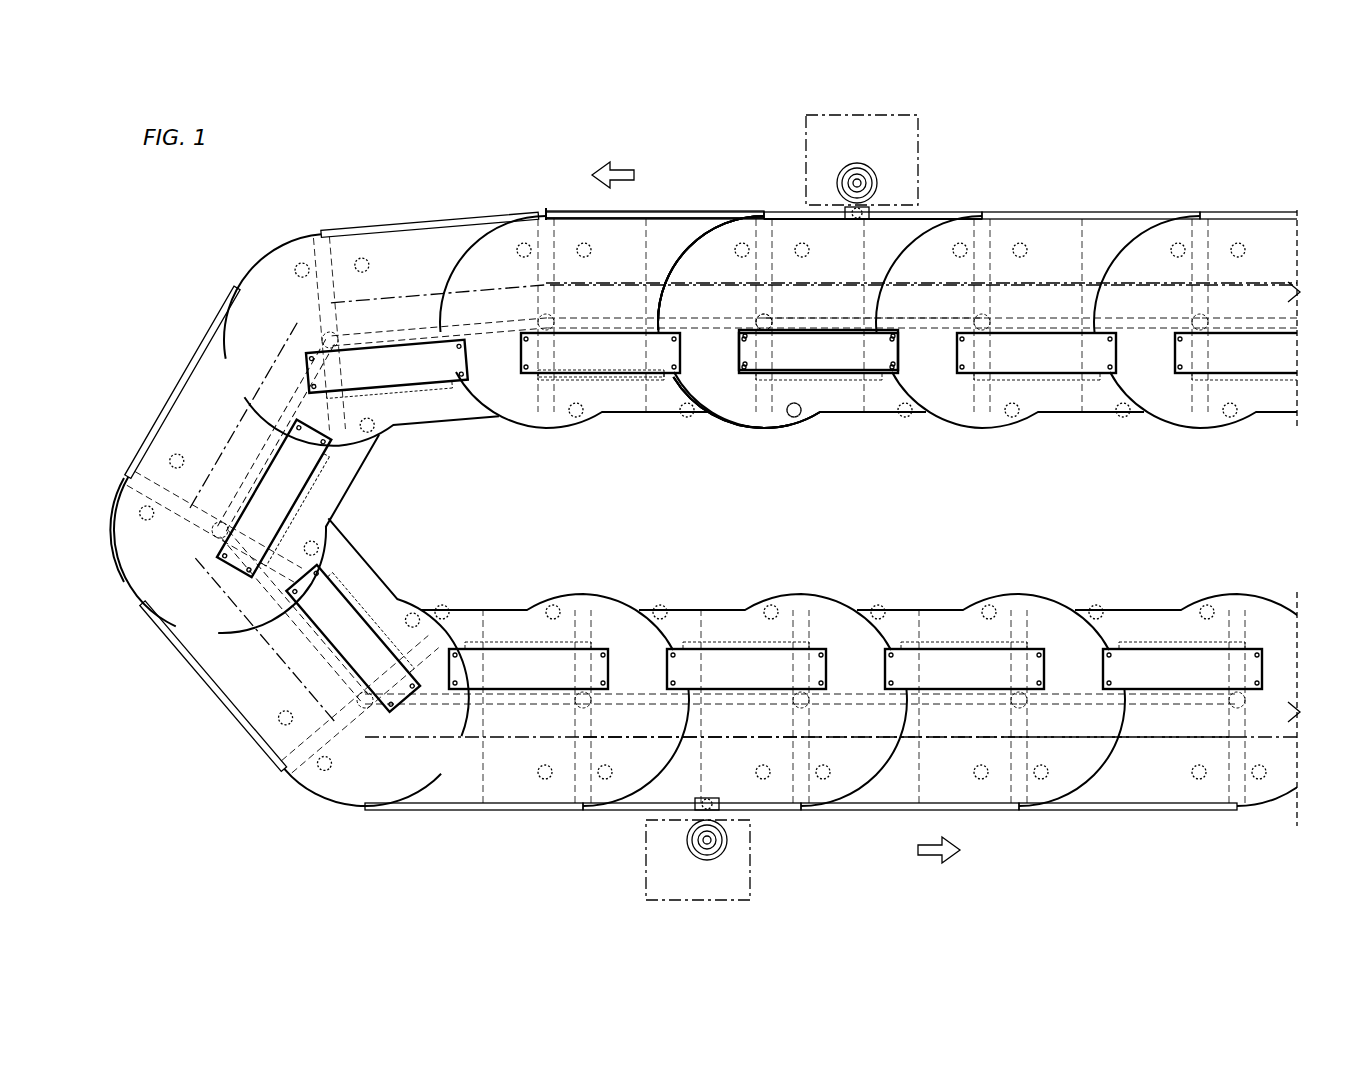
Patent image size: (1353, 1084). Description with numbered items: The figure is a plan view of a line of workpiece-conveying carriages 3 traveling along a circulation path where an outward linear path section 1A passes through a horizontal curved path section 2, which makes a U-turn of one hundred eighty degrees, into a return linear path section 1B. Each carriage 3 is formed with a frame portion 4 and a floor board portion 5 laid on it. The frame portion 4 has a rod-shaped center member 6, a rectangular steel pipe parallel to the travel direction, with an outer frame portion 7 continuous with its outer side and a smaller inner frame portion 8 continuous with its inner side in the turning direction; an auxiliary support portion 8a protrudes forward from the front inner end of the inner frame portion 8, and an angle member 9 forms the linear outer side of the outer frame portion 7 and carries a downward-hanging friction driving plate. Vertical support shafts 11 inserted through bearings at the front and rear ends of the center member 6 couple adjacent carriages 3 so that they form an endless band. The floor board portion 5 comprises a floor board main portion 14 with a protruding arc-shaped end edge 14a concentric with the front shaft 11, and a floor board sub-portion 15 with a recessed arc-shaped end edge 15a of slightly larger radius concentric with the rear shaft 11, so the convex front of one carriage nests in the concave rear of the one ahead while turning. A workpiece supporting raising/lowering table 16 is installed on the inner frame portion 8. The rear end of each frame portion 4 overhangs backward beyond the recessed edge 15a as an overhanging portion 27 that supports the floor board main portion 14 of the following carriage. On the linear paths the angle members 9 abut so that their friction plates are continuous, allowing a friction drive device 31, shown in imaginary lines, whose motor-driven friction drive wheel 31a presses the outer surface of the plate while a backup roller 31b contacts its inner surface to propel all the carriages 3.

The outward linear path section 1A is at (1128, 280).
The return linear path section 1B is at (1180, 742).
The horizontal curved path section 2 is at (170, 517).
The carriage 3 is at (845, 270).
The frame portion 4 is at (863, 404).
The floor board portion 5 is at (723, 394).
The rod-shaped center member 6 is at (850, 314).
The outer frame portion 7 is at (666, 220).
The inner frame portion 8 is at (800, 417).
The auxiliary support portion 8a is at (545, 392).
The angle member 9 is at (550, 203).
The vertical support shaft 11 is at (757, 317).
The floor board main portion 14 is at (712, 386).
The protruding arc-shaped end edge 14a is at (758, 430).
The floor board sub-portion 15 is at (622, 218).
The recessed arc-shaped end edge 15a is at (705, 232).
The raising/lowering table 16 is at (806, 364).
The overhanging portion 27 is at (918, 324).
The friction drive device 31 is at (925, 152).
The friction drive wheel 31a is at (838, 176).
The backup roller 31b is at (872, 212).